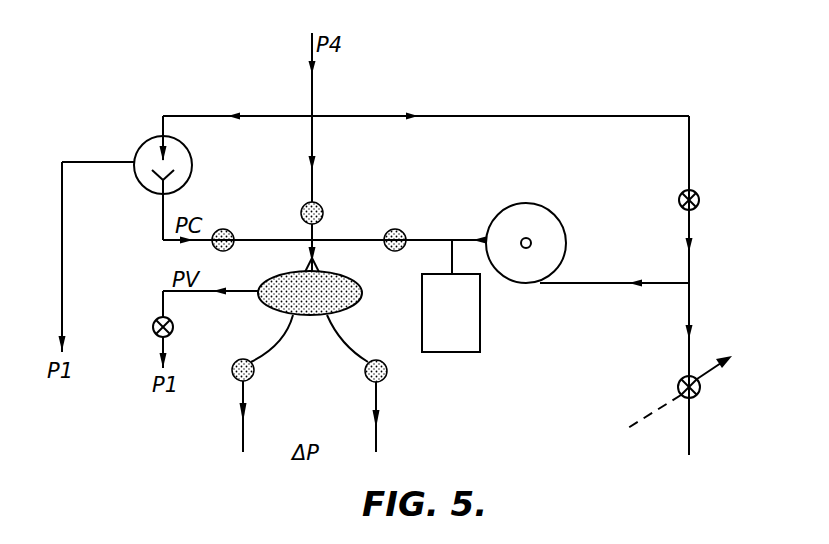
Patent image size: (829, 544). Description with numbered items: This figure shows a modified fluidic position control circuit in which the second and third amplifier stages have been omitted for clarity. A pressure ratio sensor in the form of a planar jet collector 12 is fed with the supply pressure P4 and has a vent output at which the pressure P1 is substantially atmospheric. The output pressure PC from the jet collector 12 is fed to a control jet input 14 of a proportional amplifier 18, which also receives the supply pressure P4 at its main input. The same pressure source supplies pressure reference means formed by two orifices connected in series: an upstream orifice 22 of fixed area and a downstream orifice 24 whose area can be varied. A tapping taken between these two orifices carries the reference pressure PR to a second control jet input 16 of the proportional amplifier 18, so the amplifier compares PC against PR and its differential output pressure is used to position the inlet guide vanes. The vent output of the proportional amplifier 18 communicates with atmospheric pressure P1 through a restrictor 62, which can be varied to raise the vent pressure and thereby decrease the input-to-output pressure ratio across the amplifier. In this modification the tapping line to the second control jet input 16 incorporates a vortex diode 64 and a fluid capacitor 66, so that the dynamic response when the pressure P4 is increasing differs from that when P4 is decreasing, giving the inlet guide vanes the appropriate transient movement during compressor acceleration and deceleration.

The planar jet collector 12 is at (141, 150).
The control jet input 14 is at (232, 233).
The second control jet input 16 is at (404, 232).
The proportional amplifier 18 is at (368, 294).
The upstream orifice 22 is at (698, 194).
The downstream orifice 24 is at (699, 396).
The restrictor 62 is at (174, 327).
The vortex diode 64 is at (558, 226).
The fluid capacitor 66 is at (448, 328).